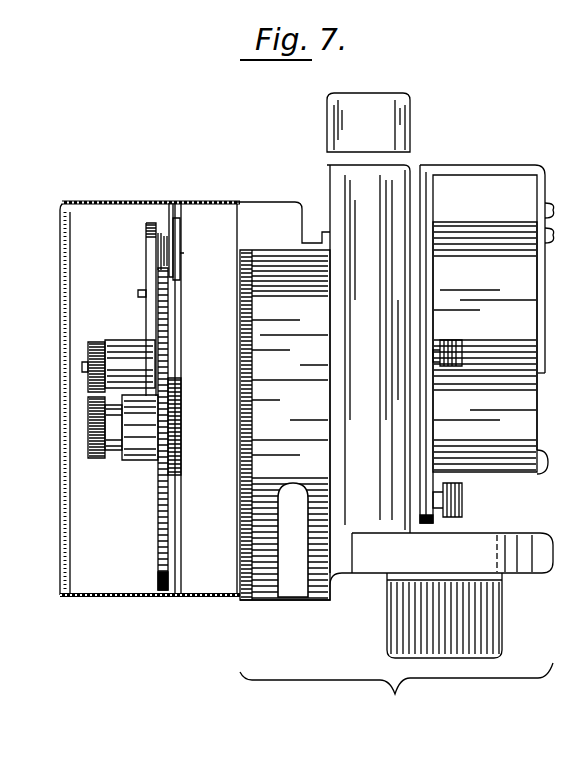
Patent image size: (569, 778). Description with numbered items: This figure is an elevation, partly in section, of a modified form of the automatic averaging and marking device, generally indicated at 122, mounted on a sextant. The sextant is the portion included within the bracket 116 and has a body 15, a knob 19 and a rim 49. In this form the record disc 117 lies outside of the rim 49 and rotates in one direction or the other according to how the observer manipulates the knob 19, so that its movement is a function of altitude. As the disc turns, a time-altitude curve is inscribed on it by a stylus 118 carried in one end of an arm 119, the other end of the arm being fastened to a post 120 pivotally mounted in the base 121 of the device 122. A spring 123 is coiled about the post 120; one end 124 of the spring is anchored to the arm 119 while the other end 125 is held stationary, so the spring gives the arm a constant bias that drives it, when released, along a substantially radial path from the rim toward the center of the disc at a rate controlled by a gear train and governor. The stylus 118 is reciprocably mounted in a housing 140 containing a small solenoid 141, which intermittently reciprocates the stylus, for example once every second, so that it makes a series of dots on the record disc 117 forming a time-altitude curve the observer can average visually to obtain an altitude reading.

The body 15 is at (405, 172).
The knob 19 is at (503, 618).
The rim 49 is at (268, 602).
The bracket 116 is at (396, 695).
The record disc 117 is at (160, 565).
The stylus 118 is at (157, 362).
The arm 119 is at (146, 272).
The post 120 is at (164, 236).
The base 121 is at (213, 212).
The automatic averaging and marking device 122 is at (178, 208).
The spring 123 is at (158, 236).
The end of spring 124 is at (138, 293).
The other end of spring 125 is at (170, 230).
The housing 140 is at (128, 340).
The solenoid 141 is at (100, 393).